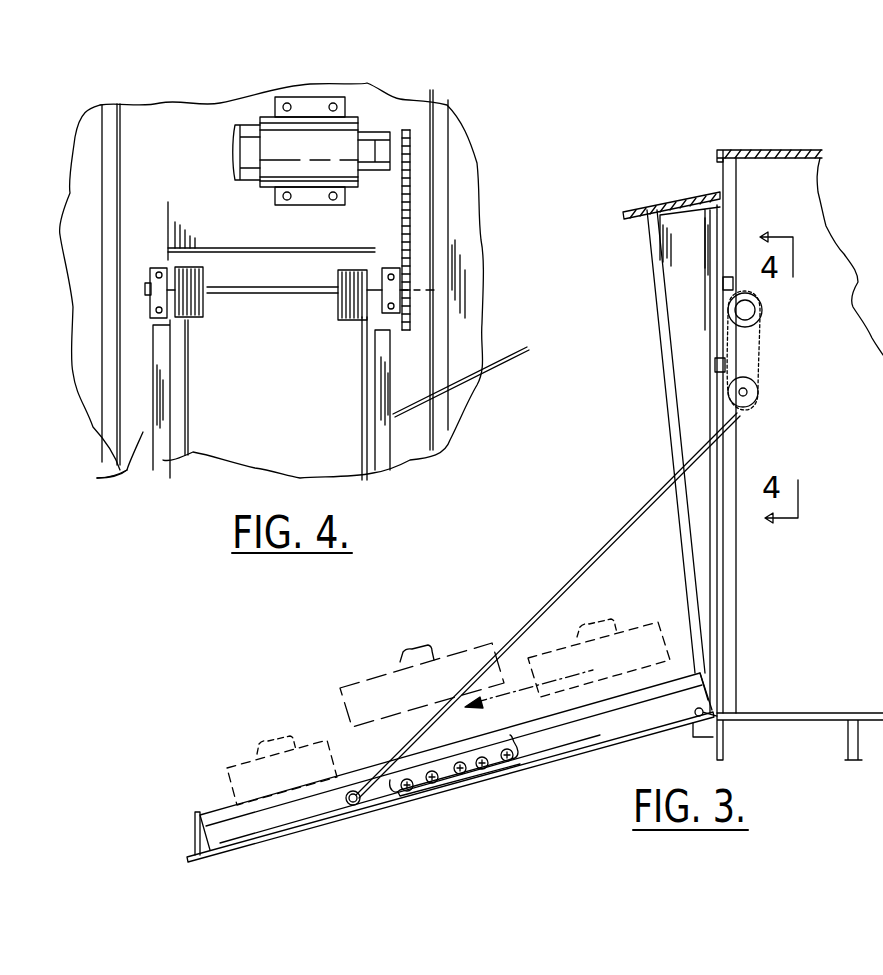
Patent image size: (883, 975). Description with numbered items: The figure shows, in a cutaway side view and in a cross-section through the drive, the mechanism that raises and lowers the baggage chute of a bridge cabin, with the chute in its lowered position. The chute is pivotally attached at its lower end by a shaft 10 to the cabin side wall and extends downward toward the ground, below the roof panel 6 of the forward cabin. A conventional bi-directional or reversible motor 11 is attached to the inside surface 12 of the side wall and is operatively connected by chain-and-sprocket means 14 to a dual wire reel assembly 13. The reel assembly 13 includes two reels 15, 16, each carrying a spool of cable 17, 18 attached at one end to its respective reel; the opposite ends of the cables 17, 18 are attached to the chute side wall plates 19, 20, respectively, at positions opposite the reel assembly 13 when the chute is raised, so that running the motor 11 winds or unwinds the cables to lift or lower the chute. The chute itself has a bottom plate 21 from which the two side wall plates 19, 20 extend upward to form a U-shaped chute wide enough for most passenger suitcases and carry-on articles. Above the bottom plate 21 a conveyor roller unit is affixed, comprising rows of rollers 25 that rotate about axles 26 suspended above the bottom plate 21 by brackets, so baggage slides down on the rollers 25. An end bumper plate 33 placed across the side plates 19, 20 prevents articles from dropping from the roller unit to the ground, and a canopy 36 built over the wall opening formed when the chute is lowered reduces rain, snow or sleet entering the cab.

In FIG. 3, the roof panel 6 is at (765, 150).
In FIG. 3, the shaft 10 is at (732, 713).
In FIG. 4, the reversible motor 11 is at (356, 117).
In FIG. 3, the reversible motor 11 is at (762, 307).
In FIG. 4, the inside surface 12 is at (232, 100).
In FIG. 4, the dual wire reel assembly 13 is at (303, 280).
In FIG. 4, the chain-and-sprocket means 14 is at (420, 186).
In FIG. 3, the chain-and-sprocket means 14 is at (775, 352).
In FIG. 4, the reel 15 is at (367, 270).
In FIG. 3, the reel 15 is at (760, 388).
In FIG. 4, the reel 16 is at (207, 265).
In FIG. 4, the cable 17 is at (358, 390).
In FIG. 3, the cable 17 is at (620, 525).
In FIG. 4, the cable 18 is at (187, 384).
In FIG. 4, the chute side wall plate 19 is at (480, 377).
In FIG. 3, the chute side wall plate 19 is at (570, 730).
In FIG. 4, the chute side wall plate 20 is at (91, 476).
In FIG. 3, the bottom plate 21 is at (299, 830).
In FIG. 3, the rollers 25 is at (483, 772).
In FIG. 3, the axles 26 is at (458, 778).
In FIG. 3, the end bumper plate 33 is at (193, 830).
In FIG. 3, the canopy 36 is at (678, 186).